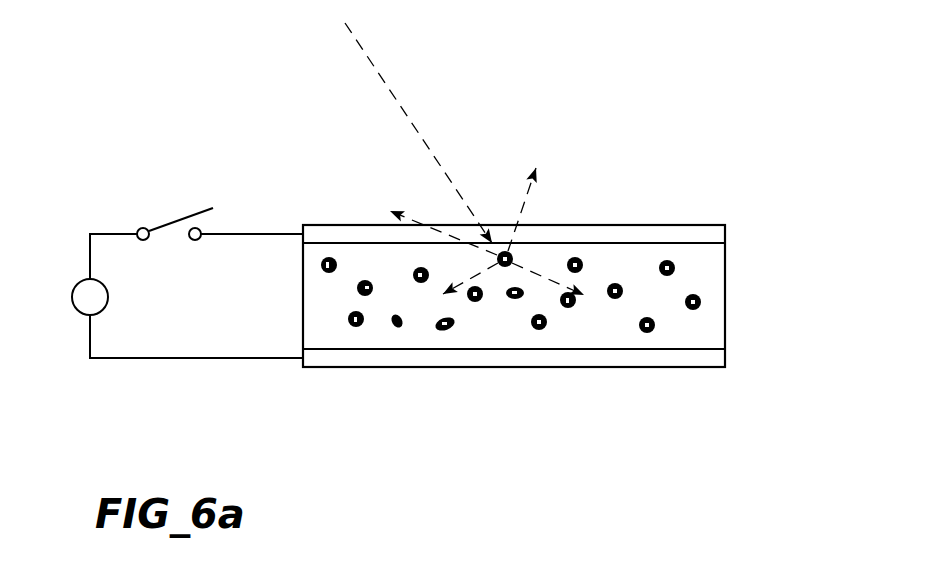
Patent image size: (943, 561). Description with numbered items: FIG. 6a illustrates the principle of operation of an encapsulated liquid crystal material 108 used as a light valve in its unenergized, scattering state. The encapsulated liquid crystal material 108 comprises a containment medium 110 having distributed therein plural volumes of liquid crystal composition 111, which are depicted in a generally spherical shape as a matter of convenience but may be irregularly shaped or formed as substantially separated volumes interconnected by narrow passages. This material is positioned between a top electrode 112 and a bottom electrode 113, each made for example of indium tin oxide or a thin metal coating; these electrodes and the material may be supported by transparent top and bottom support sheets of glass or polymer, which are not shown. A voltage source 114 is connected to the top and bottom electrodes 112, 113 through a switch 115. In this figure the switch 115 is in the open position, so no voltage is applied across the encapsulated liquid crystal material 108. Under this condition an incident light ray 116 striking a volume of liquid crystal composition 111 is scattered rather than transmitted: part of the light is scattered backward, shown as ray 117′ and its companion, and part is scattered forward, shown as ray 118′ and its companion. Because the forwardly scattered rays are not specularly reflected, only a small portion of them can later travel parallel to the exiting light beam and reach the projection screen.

The encapsulated liquid crystal material 108 is at (763, 245).
The containment medium 110 is at (603, 258).
The liquid crystal composition 111 is at (397, 329).
The top electrode 112 is at (682, 233).
The bottom electrode 113 is at (687, 358).
The voltage source 114 is at (72, 292).
The switch 115 is at (172, 218).
The incident light ray 116 is at (372, 60).
The backward scattered ray 117′ is at (387, 213).
The forward scattered ray 118′ is at (450, 298).